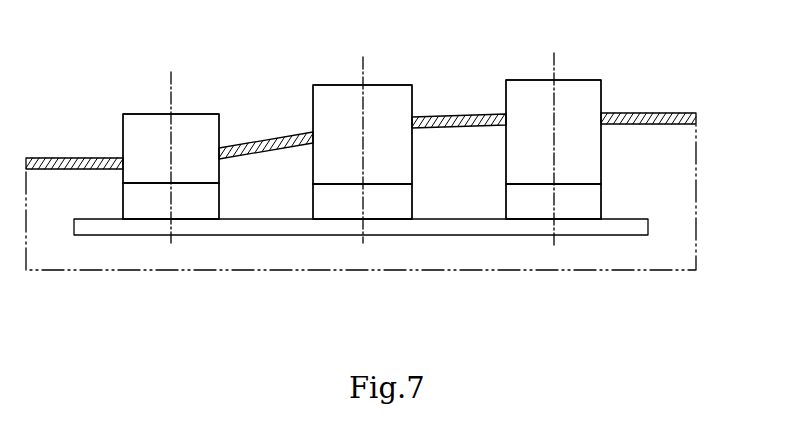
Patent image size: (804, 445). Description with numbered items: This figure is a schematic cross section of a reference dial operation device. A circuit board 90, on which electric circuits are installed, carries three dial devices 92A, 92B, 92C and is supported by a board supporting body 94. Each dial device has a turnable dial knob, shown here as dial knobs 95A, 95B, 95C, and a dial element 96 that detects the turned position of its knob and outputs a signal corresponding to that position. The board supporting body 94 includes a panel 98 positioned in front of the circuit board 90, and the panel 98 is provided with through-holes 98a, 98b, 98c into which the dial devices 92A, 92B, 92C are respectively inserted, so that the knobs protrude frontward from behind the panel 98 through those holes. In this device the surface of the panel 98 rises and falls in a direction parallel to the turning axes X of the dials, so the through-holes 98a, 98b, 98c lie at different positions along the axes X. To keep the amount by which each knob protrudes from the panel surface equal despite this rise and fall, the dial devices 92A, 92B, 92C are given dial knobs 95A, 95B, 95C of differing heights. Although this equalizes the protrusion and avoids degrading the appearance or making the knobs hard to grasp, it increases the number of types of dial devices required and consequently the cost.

The circuit board 90 is at (464, 219).
The dial device 92A is at (136, 133).
The dial device 92B is at (391, 116).
The dial device 92C is at (581, 113).
The board supporting body 94 is at (602, 271).
The dial knob 95A is at (128, 145).
The dial knob 95B is at (399, 72).
The dial knob 95C is at (578, 67).
The dial element 96 is at (128, 205).
The panel 98 is at (363, 119).
The through-hole 98a is at (222, 147).
The through-hole 98b is at (311, 132).
The through-hole 98c is at (505, 113).
The turning axis X is at (171, 92).